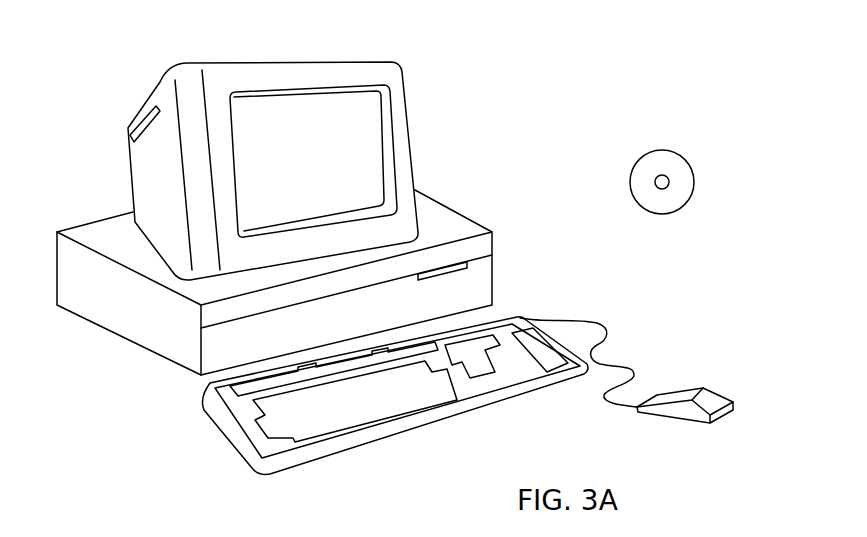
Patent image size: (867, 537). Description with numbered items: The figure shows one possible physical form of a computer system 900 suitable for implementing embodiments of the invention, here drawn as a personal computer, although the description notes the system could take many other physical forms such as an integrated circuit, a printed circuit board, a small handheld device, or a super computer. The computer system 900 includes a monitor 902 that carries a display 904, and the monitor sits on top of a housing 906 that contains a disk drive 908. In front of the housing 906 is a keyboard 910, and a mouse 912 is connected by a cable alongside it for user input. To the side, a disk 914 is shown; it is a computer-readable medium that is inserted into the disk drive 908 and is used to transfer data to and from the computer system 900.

The computer system 900 is at (590, 33).
The monitor 902 is at (398, 170).
The display 904 is at (360, 118).
The housing 906 is at (153, 353).
The disk drive 908 is at (452, 258).
The keyboard 910 is at (383, 428).
The mouse 912 is at (703, 388).
The disk 914 is at (677, 153).